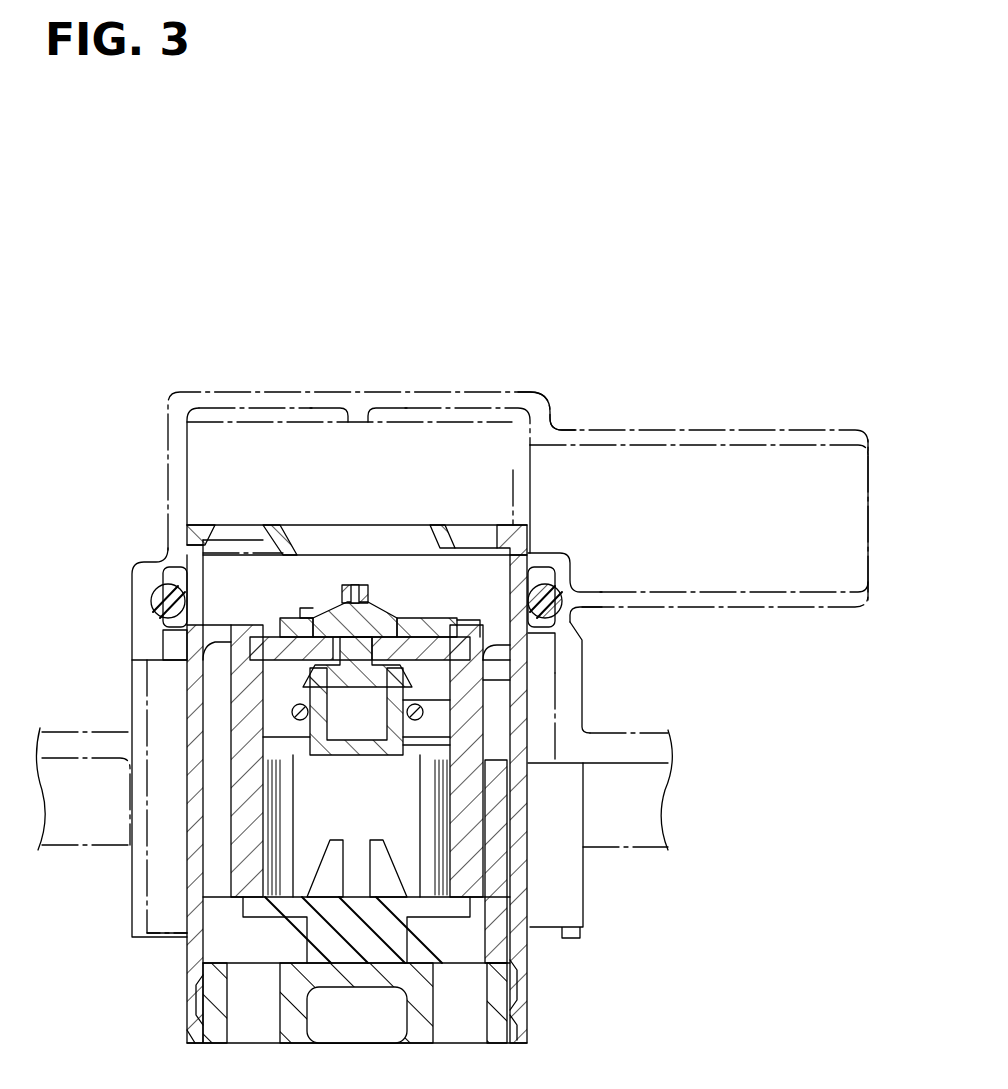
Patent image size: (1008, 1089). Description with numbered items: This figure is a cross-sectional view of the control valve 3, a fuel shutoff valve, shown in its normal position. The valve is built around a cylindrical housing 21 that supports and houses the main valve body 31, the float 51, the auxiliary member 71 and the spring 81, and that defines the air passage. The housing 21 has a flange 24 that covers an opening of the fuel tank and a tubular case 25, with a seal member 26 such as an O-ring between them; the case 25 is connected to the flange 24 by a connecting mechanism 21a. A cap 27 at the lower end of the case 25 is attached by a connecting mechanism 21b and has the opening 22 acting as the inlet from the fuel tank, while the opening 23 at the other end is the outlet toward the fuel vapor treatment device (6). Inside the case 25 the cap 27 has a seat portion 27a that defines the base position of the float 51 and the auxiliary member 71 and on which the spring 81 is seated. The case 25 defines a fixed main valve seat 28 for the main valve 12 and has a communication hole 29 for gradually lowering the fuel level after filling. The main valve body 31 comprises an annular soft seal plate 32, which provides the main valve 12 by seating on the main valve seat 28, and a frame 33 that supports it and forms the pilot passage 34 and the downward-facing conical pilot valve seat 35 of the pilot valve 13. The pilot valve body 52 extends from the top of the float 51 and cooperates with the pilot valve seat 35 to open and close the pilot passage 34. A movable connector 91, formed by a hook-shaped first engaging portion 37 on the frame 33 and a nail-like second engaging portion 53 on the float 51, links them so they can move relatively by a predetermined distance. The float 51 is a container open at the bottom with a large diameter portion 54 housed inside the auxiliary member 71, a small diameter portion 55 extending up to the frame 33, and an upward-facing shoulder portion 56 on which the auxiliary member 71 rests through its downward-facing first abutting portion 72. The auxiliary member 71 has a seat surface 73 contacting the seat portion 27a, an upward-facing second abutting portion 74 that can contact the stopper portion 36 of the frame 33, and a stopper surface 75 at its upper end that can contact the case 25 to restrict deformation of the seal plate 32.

The control valve 3 is at (562, 400).
The pipe 6 is at (694, 528).
The main valve 12 is at (277, 563).
The pilot valve 13 is at (323, 596).
The housing 21 is at (167, 398).
The connecting mechanism 21a is at (120, 905).
The connecting mechanism 21b is at (172, 1000).
The opening 22 is at (240, 1048).
The opening 23 is at (870, 440).
The flange 24 is at (167, 427).
The case 25 is at (263, 530).
The seal member 26 is at (153, 593).
The cap 27 is at (212, 972).
The seat portion 27a is at (520, 962).
The main valve seat 28 is at (293, 545).
The communication hole 29 is at (197, 677).
The main valve body 31 is at (293, 607).
The seal plate 32 is at (432, 583).
The frame 33 is at (382, 583).
The pilot passage 34 is at (363, 583).
The pilot valve seat 35 is at (340, 585).
The stopper portion 36 is at (510, 660).
The first engaging portion 37 is at (292, 709).
The float 51 is at (267, 760).
The pilot valve body 52 is at (322, 592).
The second engaging portion 53 is at (243, 713).
The large diameter portion 54 is at (445, 833).
The small diameter portion 55 is at (387, 712).
The shoulder portion 56 is at (445, 745).
The auxiliary member 71 is at (230, 693).
The first abutting portion 72 is at (420, 716).
The seat surface 73 is at (485, 935).
The second abutting portion 74 is at (510, 680).
The stopper surface 75 is at (477, 590).
The spring 81 is at (290, 788).
The movable connector 91 is at (287, 702).